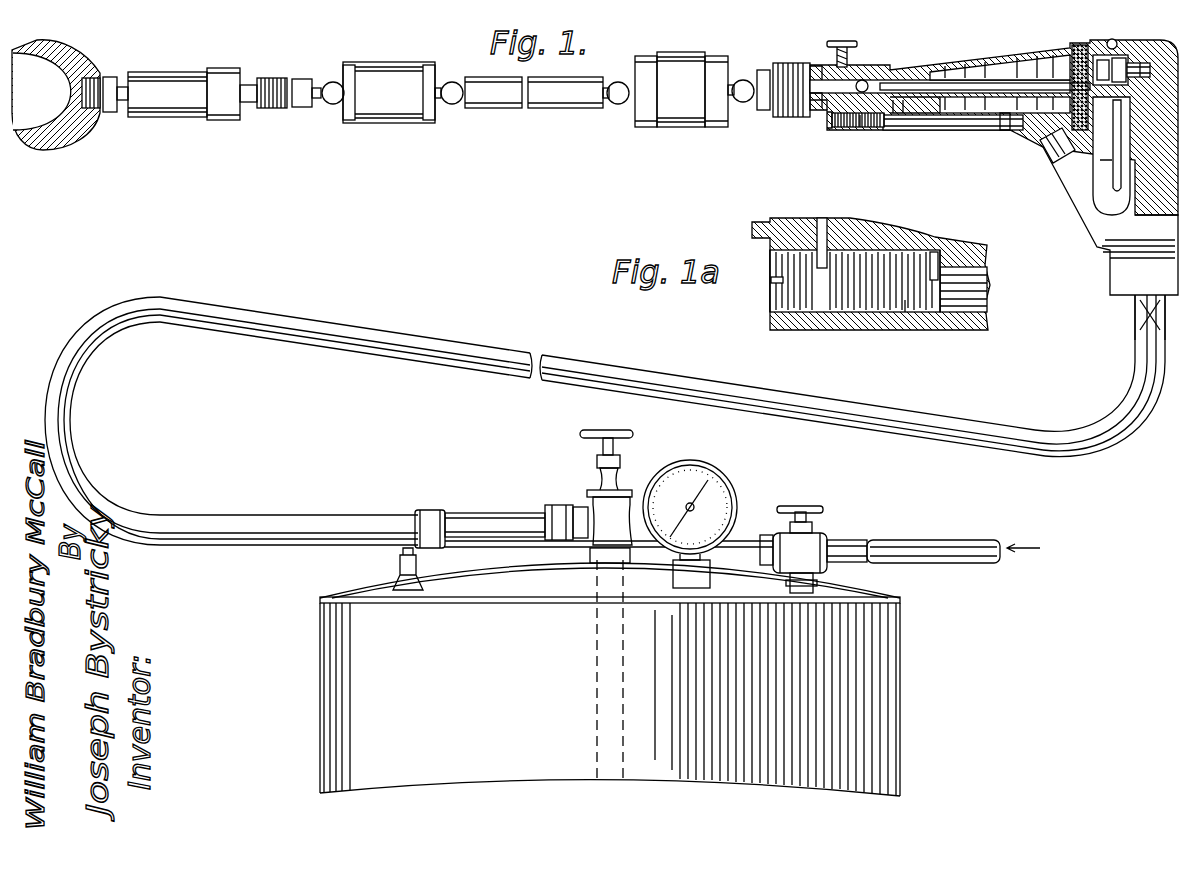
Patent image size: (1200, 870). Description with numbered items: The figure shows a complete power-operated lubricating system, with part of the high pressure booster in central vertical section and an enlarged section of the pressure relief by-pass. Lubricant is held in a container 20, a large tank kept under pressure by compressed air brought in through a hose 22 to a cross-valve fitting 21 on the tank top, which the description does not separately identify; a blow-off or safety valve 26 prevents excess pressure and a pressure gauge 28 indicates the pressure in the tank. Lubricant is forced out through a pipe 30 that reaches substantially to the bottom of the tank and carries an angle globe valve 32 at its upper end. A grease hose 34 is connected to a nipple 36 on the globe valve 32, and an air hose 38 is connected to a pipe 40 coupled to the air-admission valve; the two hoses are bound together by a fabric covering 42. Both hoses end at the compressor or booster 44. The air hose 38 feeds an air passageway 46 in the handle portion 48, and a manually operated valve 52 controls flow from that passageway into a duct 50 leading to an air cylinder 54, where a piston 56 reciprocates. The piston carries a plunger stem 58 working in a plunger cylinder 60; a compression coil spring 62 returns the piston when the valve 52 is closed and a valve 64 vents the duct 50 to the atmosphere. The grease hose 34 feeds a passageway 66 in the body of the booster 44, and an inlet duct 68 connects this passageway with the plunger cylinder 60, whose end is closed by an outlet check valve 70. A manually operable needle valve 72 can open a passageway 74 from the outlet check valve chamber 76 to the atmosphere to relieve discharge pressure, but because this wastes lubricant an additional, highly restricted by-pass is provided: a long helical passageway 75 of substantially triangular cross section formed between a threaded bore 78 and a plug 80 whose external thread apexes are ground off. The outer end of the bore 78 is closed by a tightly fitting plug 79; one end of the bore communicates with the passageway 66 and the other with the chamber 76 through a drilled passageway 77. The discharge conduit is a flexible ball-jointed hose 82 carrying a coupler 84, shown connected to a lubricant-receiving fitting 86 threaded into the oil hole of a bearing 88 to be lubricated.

In FIG. 1, the container 20 is at (880, 685).
In FIG. 1, the cross valve 21 is at (810, 538).
In FIG. 1, the hose 22 is at (920, 542).
In FIG. 1, the blow-off or safety valve 26 is at (398, 568).
In FIG. 1, the pressure gauge 28 is at (715, 492).
In FIG. 1, the pipe 30 is at (598, 690).
In FIG. 1, the angle globe valve 32 is at (598, 510).
In FIG. 1, the hose 34 is at (1093, 168).
In FIG. 1, the nipple 36 is at (468, 512).
In FIG. 1, the air hose 38 is at (1168, 335).
In FIG. 1, the pipe 40 is at (490, 548).
In FIG. 1, the fabric covering 42 is at (592, 362).
In FIG. 1, the booster 44 is at (1010, 125).
In FIG. 1, the air passageway 46 is at (1138, 165).
In FIG. 1, the handle portion 48 is at (1165, 170).
In FIG. 1, the duct 50 is at (1080, 65).
In FIG. 1, the manually operated valve 52 is at (1158, 66).
In FIG. 1, the air cylinder 54 is at (1035, 120).
In FIG. 1, the piston 56 is at (1045, 80).
In FIG. 1, the plunger stem 58 is at (960, 85).
In FIG. 1, the plunger cylinder 60 is at (893, 75).
In FIG. 1, the compression coil spring 62 is at (1000, 72).
In FIG. 1, the valve 64 is at (1117, 48).
In FIG. 1, the passageway 66 is at (957, 125).
In FIG. 1A, the passageway 66 is at (995, 282).
In FIG. 1, the inlet duct 68 is at (898, 105).
In FIG. 1, the outlet check valve 70 is at (864, 80).
In FIG. 1, the needle valve 72 is at (835, 48).
In FIG. 1, the passageway 74 is at (812, 66).
In FIG. 1, the helical passageway 75 is at (866, 128).
In FIG. 1A, the helical passageway 75 is at (870, 332).
In FIG. 1, the outlet check valve chamber 76 is at (826, 118).
In FIG. 1A, the drilled passageway 77 is at (838, 225).
In FIG. 1, the threaded bore 78 is at (848, 130).
In FIG. 1A, the threaded bore 78 is at (940, 268).
In FIG. 1, the plug 79 is at (830, 126).
In FIG. 1A, the plug 79 is at (780, 295).
In FIG. 1, the plug 80 is at (886, 130).
In FIG. 1A, the plug 80 is at (940, 332).
In FIG. 1, the flexible ball-jointed hose 82 is at (566, 108).
In FIG. 1, the coupler 84 is at (185, 120).
In FIG. 1, the lubricant-receiving fitting 86 is at (113, 114).
In FIG. 1, the bearing 88 is at (55, 152).